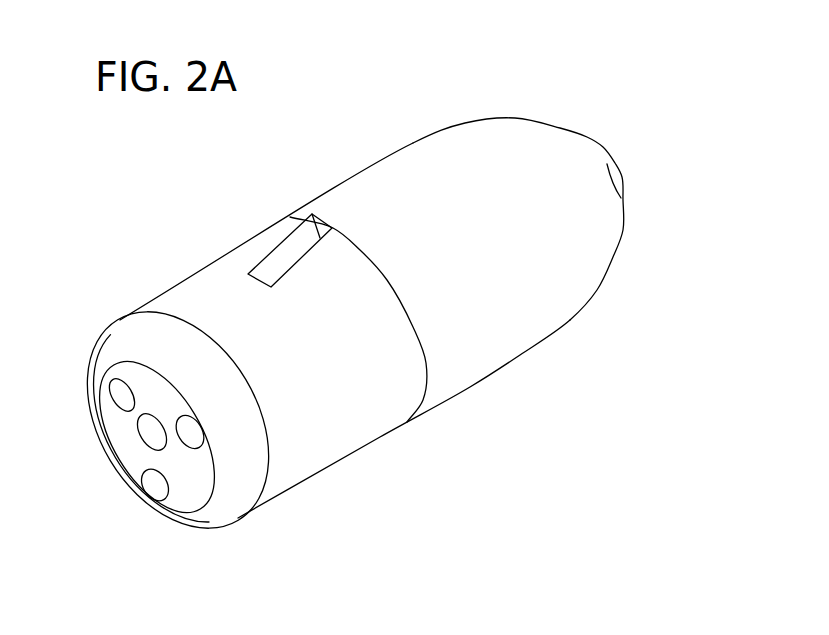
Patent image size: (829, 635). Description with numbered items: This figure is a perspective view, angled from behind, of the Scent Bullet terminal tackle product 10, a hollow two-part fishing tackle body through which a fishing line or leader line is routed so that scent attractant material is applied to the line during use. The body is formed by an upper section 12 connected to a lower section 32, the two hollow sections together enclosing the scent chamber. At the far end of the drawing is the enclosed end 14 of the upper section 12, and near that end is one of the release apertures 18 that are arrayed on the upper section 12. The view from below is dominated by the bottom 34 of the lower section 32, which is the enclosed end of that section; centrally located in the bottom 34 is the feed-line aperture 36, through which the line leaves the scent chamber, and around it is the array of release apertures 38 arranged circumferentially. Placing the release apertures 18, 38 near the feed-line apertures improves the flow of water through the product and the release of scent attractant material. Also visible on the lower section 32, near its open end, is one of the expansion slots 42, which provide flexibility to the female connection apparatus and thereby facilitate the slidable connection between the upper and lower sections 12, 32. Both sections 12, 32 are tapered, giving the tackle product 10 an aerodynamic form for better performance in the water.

The Scent Bullet terminal tackle product 10 is at (393, 83).
The upper section 12 is at (502, 142).
The enclosed end 14 is at (588, 134).
The release apertures 18 is at (622, 174).
The lower section 32 is at (192, 293).
The bottom 34 is at (100, 475).
The feed-line aperture 36 is at (160, 443).
The release apertures 38 is at (120, 388).
The expansion slots 42 is at (270, 265).